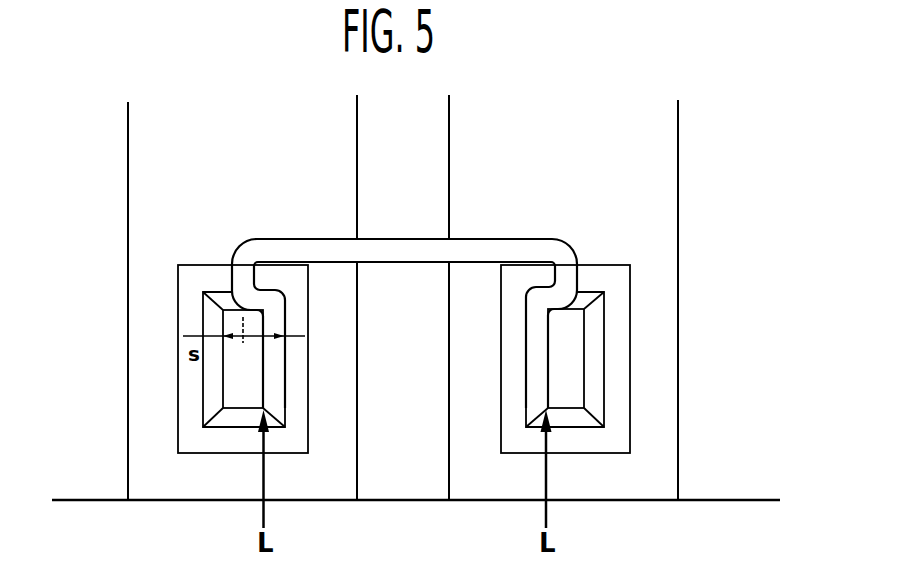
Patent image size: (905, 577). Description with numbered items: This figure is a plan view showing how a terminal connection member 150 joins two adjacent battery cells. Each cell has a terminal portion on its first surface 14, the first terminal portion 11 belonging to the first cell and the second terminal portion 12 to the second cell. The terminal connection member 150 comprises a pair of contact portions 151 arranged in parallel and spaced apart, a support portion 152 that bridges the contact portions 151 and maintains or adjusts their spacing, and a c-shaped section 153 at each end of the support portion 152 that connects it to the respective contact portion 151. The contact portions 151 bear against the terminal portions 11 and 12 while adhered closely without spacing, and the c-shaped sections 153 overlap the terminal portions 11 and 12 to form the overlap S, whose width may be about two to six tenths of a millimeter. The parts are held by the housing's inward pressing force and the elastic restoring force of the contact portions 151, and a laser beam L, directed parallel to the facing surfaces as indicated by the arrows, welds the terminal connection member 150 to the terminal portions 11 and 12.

The first terminal portion 11 is at (242, 382).
The second terminal portion 12 is at (570, 362).
The first surface 14 is at (162, 176).
The terminal connection member 150 is at (398, 280).
The contact portions 151 is at (534, 375).
The support portion 152 is at (408, 248).
The c-shaped section 153 is at (243, 283).